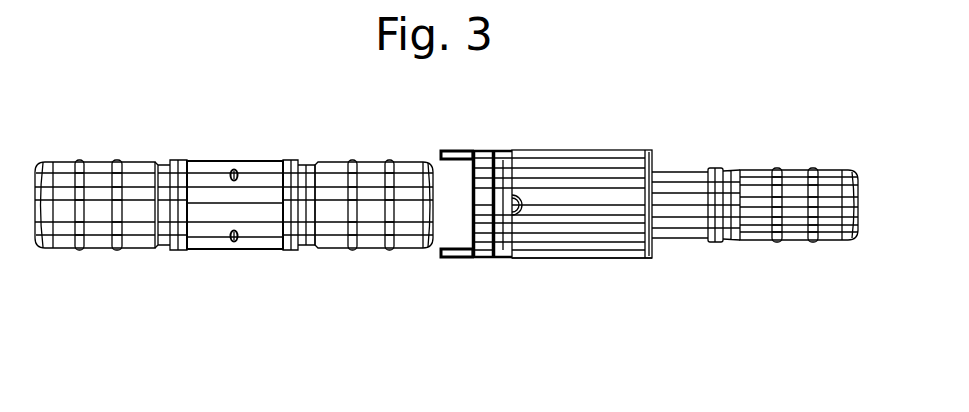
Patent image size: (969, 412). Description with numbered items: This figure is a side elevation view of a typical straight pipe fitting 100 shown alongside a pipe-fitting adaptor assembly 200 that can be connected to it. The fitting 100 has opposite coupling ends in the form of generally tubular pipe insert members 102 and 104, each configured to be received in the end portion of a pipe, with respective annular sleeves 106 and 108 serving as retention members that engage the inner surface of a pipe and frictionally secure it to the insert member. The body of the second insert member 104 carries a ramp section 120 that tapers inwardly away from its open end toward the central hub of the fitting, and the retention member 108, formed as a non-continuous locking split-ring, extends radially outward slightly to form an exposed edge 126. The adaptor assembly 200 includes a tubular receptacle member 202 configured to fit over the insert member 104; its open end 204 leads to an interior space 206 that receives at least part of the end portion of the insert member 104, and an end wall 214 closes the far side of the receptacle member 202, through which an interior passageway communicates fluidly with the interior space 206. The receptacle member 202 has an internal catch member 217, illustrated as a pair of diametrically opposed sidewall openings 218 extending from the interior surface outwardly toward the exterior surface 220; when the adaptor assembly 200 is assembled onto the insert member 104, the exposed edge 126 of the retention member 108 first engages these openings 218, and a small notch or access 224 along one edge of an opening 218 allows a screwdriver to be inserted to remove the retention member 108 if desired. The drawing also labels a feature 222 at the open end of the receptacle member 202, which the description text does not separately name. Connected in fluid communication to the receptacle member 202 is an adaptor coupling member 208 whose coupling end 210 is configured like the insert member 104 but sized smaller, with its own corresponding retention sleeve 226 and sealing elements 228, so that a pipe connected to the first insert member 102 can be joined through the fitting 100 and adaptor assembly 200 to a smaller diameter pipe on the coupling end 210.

The fitting 100 is at (230, 158).
The first insert member 102 is at (57, 160).
The second insert member 104 is at (410, 160).
The annular sleeve 106 is at (176, 248).
The retention member 108 is at (291, 250).
The ramp section 120 is at (315, 250).
The exposed edge 126 is at (287, 160).
The pipe-fitting adaptor assembly 200 is at (634, 144).
The receptacle member 202 is at (535, 158).
The open end 204 is at (445, 241).
The interior space 206 is at (497, 246).
The adaptor coupling member 208 is at (696, 169).
The coupling end 210 is at (832, 170).
The end wall 214 is at (657, 245).
The internal catch member 217 is at (467, 259).
The sidewall openings 218 is at (512, 150).
The exterior surface 220 is at (572, 258).
The upper flange 222 is at (457, 150).
The notch 224 is at (533, 216).
The retention member/sleeve 226 is at (715, 245).
The sealing elements 228 is at (815, 243).